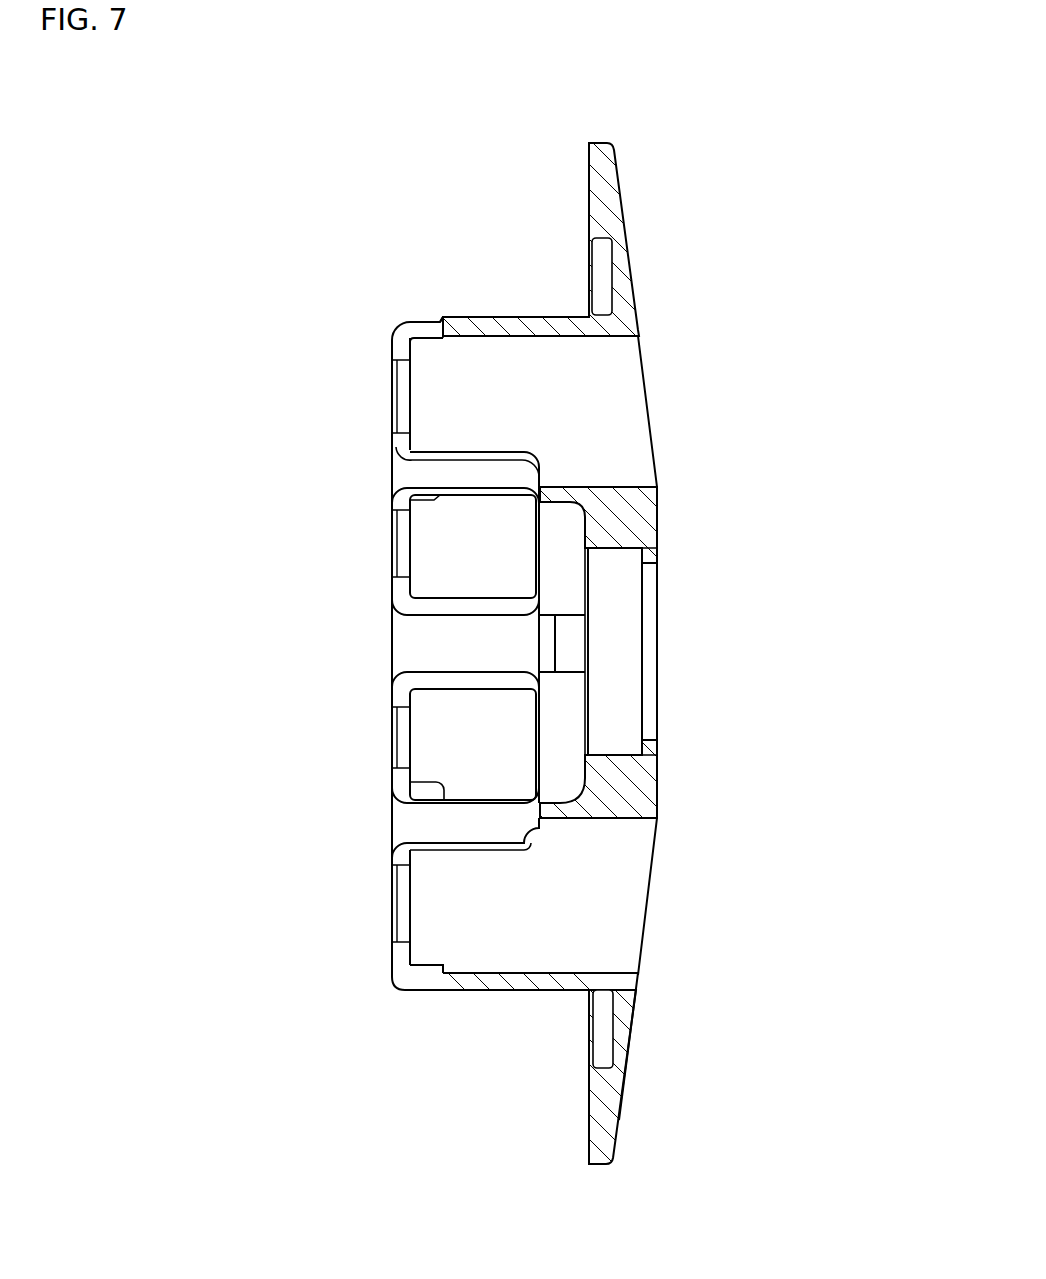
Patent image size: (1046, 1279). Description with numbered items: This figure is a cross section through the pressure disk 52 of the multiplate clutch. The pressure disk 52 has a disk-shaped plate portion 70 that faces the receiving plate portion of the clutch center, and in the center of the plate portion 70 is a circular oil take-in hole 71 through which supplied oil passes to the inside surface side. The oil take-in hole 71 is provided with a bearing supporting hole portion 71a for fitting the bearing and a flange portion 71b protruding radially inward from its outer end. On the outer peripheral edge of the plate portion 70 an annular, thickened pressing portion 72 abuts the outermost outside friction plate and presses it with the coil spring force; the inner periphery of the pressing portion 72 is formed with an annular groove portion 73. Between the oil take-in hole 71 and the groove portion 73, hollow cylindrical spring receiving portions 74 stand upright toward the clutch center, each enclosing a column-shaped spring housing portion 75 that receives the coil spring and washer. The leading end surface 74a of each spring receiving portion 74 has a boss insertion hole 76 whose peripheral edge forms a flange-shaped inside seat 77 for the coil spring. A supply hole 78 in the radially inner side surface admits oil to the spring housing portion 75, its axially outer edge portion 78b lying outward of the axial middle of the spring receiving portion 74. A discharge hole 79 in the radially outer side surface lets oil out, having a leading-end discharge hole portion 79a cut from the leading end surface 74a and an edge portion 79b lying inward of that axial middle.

The pressure disk 52 is at (340, 212).
The plate portion 70 is at (636, 1026).
The oil take-in hole 71 is at (658, 645).
The bearing supporting hole portion 71a is at (620, 755).
The flange portion 71b is at (643, 561).
The pressing portion 72 is at (589, 1126).
The groove portion 73 is at (603, 1037).
The spring receiving portion 74 is at (388, 337).
The leading end surface 74a is at (391, 391).
The spring housing portion 75 is at (592, 405).
The boss insertion hole 76 is at (402, 408).
The inside seat 77 is at (404, 346).
The supply hole 78 is at (457, 455).
The edge portion of the supply hole 78b is at (457, 475).
The discharge hole 79 is at (418, 326).
The leading-end discharge hole portion 79a is at (406, 332).
The edge portion of the discharge hole 79b is at (436, 322).